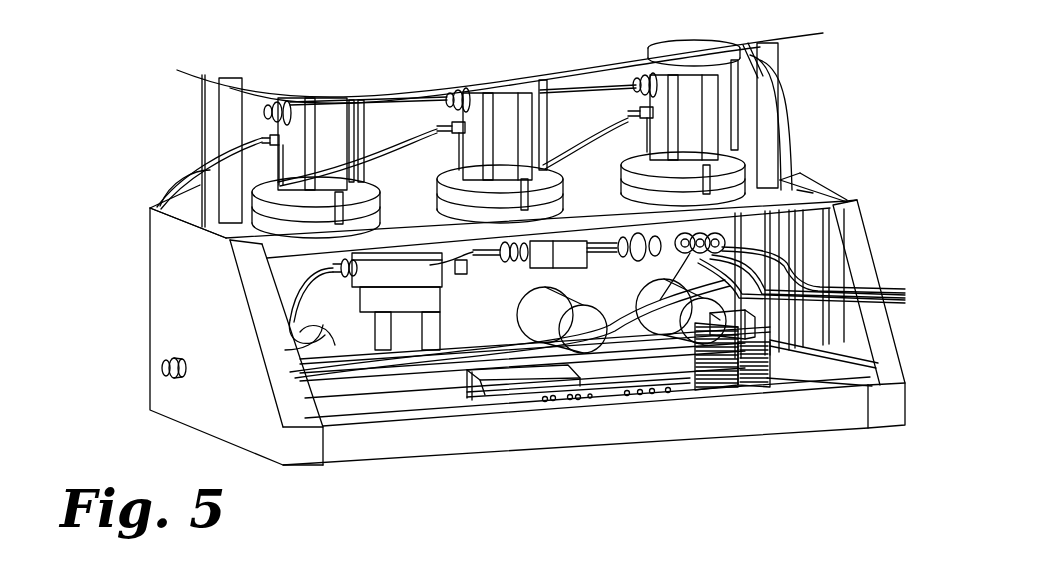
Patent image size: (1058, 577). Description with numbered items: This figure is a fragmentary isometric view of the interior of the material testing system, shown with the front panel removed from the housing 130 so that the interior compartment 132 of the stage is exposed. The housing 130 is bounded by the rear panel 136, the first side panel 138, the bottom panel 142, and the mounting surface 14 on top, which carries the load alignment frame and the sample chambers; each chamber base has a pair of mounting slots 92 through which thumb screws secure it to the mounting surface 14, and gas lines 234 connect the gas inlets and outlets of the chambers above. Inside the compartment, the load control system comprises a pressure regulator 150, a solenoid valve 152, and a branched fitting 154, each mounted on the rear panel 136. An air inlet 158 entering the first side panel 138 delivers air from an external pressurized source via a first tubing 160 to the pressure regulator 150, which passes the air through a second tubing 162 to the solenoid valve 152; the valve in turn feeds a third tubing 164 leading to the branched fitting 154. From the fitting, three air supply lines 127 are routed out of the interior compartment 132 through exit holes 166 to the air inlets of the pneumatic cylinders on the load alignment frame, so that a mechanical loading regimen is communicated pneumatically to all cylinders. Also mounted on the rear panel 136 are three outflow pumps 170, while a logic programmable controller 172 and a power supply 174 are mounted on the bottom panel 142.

The mounting surface 14 is at (586, 207).
The mounting slots 92 is at (339, 196).
The air supply lines 127 is at (802, 275).
The housing 130 is at (135, 265).
The interior compartment 132 is at (323, 305).
The rear panel 136 is at (475, 298).
The first side panel 138 is at (180, 330).
The bottom panel 142 is at (313, 470).
The pressure regulator 150 is at (400, 278).
The solenoid valve 152 is at (567, 258).
The branched fitting 154 is at (667, 236).
The air inlet 158 is at (160, 370).
The first tubing 160 is at (300, 283).
The second tubing 162 is at (460, 277).
The third tubing 164 is at (603, 255).
The exit holes 166 is at (191, 222).
The outflow pumps 170 is at (330, 352).
The logic programmable controller 172 is at (758, 380).
The power supply 174 is at (640, 373).
The gas line 234 is at (386, 97).